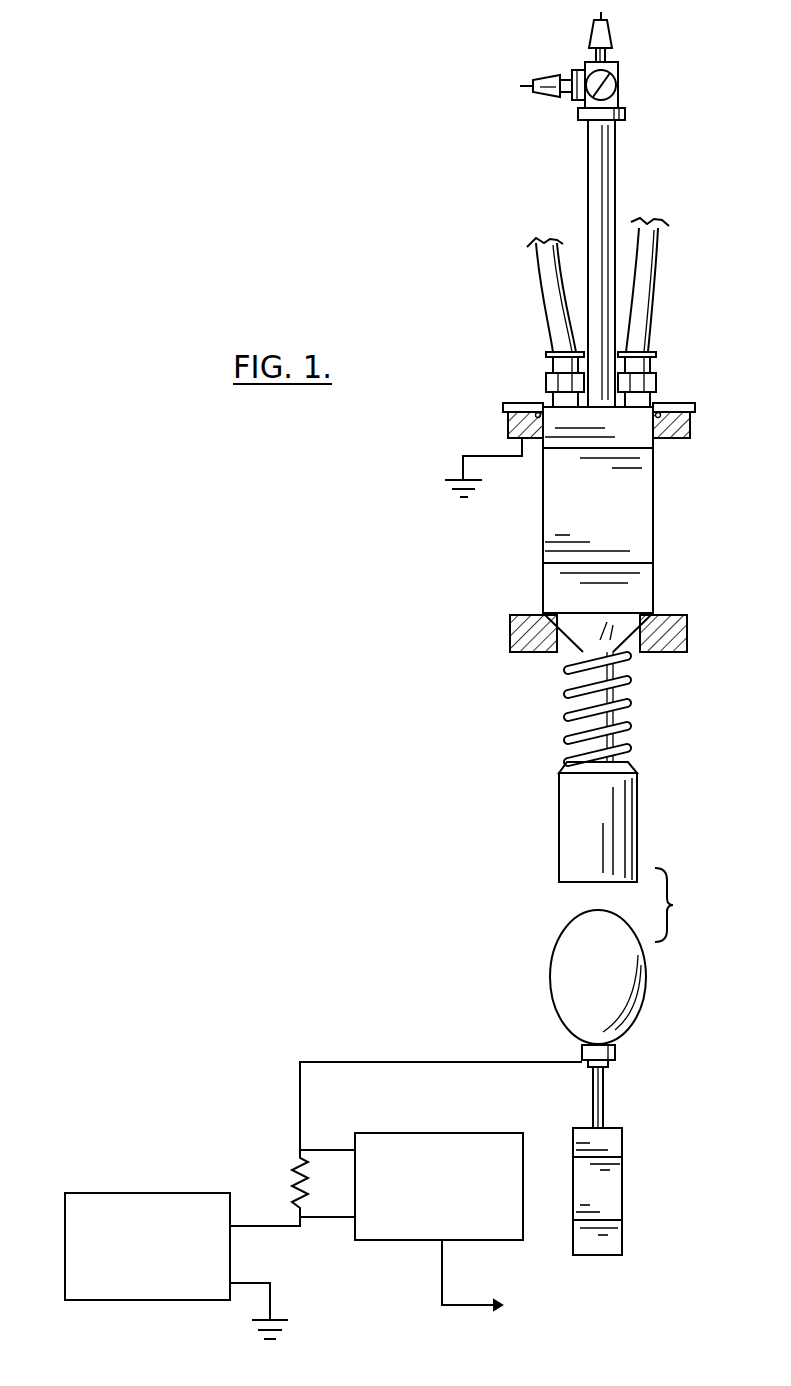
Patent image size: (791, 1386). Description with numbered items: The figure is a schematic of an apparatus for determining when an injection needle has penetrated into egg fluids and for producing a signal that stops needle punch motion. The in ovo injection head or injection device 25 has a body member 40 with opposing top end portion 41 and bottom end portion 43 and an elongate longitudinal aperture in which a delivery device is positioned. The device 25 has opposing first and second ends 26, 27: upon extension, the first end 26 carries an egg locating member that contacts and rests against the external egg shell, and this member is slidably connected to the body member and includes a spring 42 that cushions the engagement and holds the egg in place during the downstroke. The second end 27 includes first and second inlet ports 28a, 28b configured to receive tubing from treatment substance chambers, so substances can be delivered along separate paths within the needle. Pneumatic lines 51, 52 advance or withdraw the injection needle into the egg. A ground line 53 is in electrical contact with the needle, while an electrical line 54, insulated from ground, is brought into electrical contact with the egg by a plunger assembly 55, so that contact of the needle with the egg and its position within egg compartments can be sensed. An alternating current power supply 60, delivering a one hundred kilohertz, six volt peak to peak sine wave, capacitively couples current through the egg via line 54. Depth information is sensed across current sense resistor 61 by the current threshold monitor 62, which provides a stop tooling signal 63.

The injection device 25 is at (655, 558).
The first end 26 is at (560, 882).
The second end 27 is at (618, 68).
The first inlet port 28a is at (590, 42).
The second inlet port 28b is at (545, 100).
The body member 40 is at (630, 712).
The top end portion 41 is at (543, 482).
The spring 42 is at (630, 750).
The bottom end portion 43 is at (625, 825).
The pneumatic line 51 is at (545, 302).
The pneumatic line 52 is at (645, 302).
The ground line 53 is at (486, 456).
The electrical line 54 is at (487, 1060).
The plunger assembly 55 is at (625, 1170).
The alternating current power supply 60 is at (105, 1193).
The current sense resistor 61 is at (292, 1180).
The current threshold monitor 62 is at (432, 1133).
The stop tooling signal 63 is at (444, 1283).